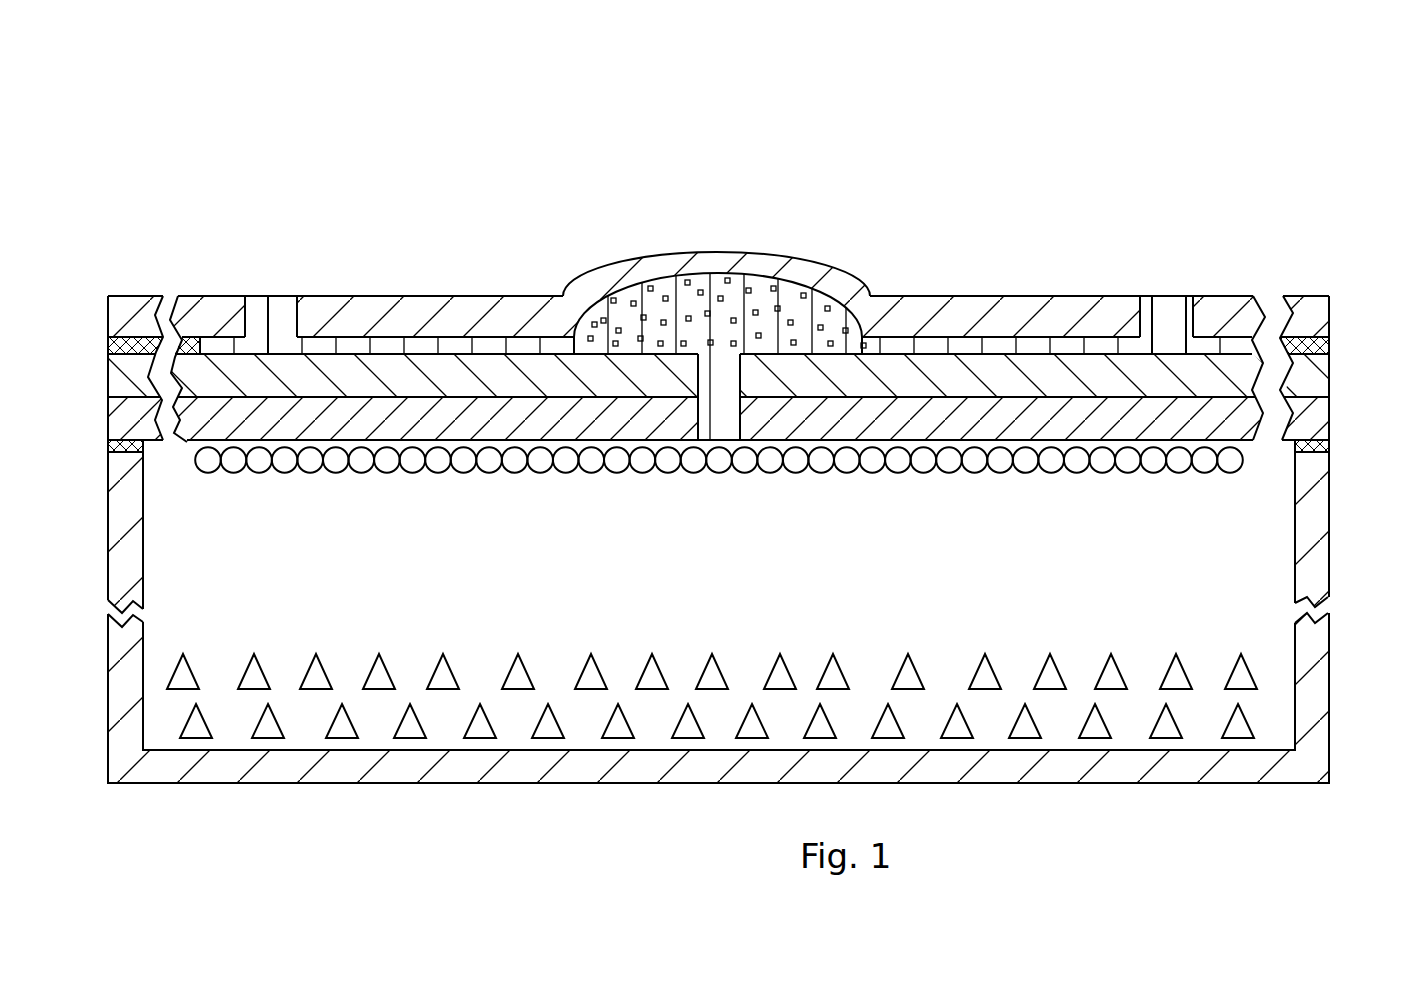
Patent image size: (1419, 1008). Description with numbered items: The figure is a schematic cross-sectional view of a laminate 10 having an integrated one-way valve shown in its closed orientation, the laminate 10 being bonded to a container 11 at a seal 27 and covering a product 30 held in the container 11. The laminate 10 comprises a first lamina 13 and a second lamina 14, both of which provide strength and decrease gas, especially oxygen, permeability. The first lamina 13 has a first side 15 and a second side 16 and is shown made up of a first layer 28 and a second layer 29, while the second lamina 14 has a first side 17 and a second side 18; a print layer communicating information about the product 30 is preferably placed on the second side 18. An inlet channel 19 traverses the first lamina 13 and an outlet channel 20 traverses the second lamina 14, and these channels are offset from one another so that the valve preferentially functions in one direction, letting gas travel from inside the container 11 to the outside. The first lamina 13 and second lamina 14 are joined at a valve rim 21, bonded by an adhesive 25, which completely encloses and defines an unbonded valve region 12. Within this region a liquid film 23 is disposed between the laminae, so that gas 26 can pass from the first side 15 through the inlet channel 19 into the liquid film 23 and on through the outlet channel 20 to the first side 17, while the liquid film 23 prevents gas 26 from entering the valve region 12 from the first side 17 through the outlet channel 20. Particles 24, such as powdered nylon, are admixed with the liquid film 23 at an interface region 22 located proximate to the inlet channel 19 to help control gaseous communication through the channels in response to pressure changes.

The laminate 10 is at (152, 196).
The container 11 is at (1325, 660).
The valve region 12 is at (1173, 145).
The first lamina 13 is at (103, 355).
The second lamina 14 is at (103, 296).
The first side 15 is at (185, 438).
The second side 16 is at (220, 360).
The first side 17 is at (684, 264).
The second side 18 is at (623, 302).
The inlet channel 19 is at (723, 402).
The outlet channel 20 is at (1187, 302).
The valve rim 21 is at (198, 353).
The interface region 22 is at (568, 237).
The liquid film 23 is at (565, 345).
The particles 24 is at (757, 302).
The adhesive 25 is at (1333, 343).
The gas 26 is at (925, 460).
The seal 27 is at (1330, 448).
The first layer 28 is at (110, 455).
The second layer 29 is at (145, 373).
The product 30 is at (748, 730).